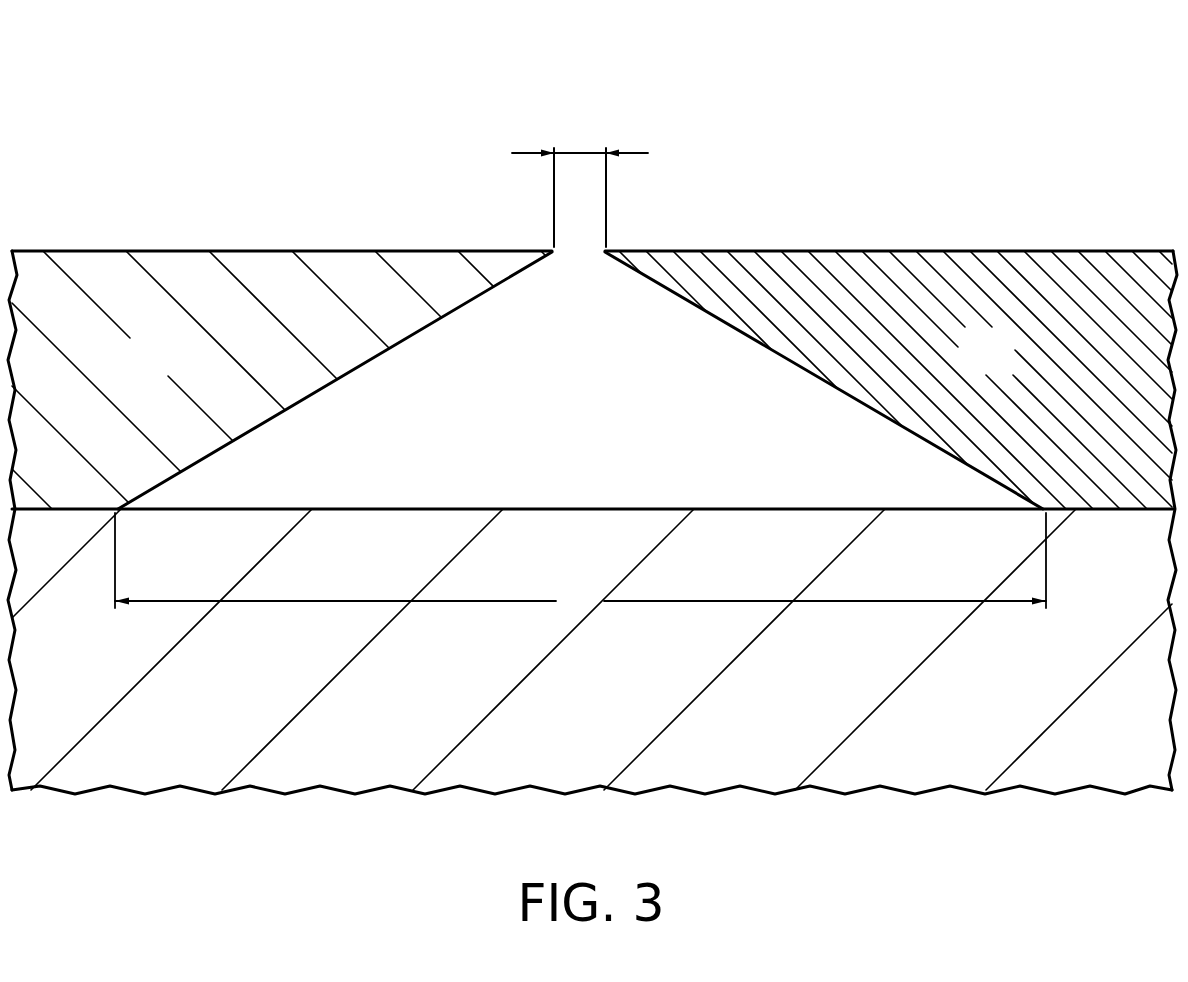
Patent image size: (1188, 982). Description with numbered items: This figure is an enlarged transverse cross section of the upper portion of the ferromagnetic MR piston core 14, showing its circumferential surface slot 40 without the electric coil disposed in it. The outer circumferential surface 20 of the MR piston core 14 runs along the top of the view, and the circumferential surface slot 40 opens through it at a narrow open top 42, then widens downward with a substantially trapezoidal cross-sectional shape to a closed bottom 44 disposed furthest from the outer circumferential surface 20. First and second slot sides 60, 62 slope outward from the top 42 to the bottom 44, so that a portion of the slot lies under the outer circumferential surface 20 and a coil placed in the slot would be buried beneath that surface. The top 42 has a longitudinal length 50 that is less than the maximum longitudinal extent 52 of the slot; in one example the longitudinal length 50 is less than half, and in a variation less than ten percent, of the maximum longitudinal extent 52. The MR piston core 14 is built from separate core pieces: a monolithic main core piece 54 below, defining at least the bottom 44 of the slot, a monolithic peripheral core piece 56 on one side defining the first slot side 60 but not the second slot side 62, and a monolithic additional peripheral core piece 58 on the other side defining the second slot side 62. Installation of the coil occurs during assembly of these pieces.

The MR piston core 14 is at (592, 399).
The outer circumferential surface 20 is at (172, 250).
The circumferential surface slot 40 is at (580, 328).
The open top 42 is at (580, 253).
The closed bottom 44 is at (453, 508).
The longitudinal length 50 is at (573, 151).
The maximum longitudinal extent 52 is at (580, 568).
The main core piece 54 is at (557, 716).
The peripheral core piece 56 is at (182, 368).
The additional peripheral core piece 58 is at (1007, 367).
The first slot side 60 is at (313, 397).
The second slot side 62 is at (845, 387).